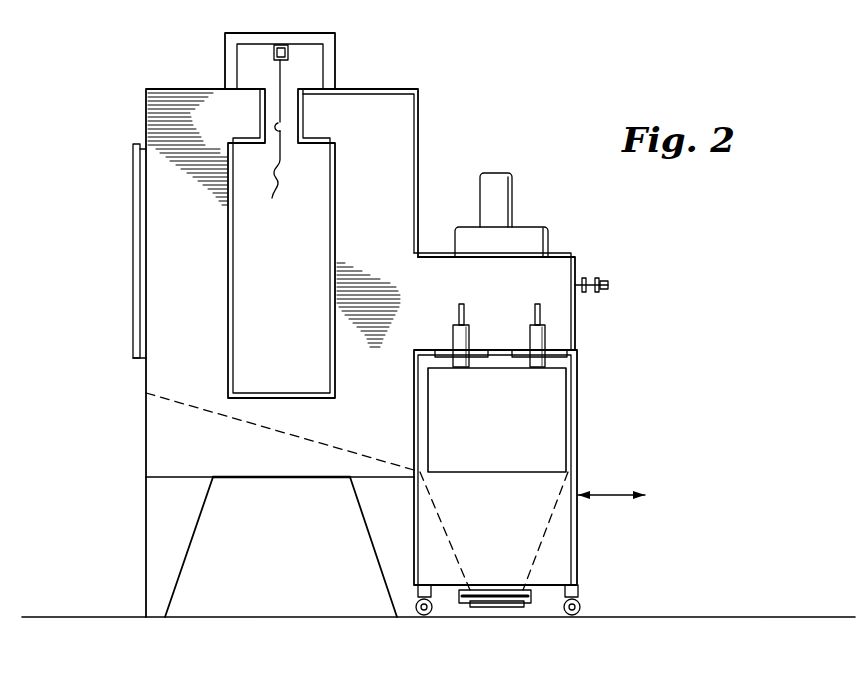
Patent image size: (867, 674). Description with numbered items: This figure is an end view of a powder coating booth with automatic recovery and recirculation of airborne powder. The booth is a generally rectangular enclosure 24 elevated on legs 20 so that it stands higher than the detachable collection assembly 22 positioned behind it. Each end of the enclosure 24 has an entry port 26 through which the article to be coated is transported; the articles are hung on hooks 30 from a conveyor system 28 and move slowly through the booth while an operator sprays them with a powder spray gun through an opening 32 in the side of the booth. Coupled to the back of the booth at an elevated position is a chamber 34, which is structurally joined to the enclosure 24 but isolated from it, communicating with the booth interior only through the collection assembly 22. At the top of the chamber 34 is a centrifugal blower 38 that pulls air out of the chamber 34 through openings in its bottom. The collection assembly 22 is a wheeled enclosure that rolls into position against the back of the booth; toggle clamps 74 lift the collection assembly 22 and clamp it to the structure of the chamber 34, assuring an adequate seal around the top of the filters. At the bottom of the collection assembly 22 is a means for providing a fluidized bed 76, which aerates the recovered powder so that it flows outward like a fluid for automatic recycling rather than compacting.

The legs 20 is at (157, 512).
The collection assembly 22 is at (592, 436).
The rectangular enclosure 24 is at (405, 140).
The entry ports 26 is at (237, 342).
The conveyor system 28 is at (289, 57).
The hooks 30 is at (277, 143).
The opening 32 is at (132, 153).
The chamber 34 is at (577, 338).
The centrifugal blower 38 is at (512, 180).
The toggle clamps 74 is at (458, 332).
The means for providing a fluidized bed 76 is at (510, 607).